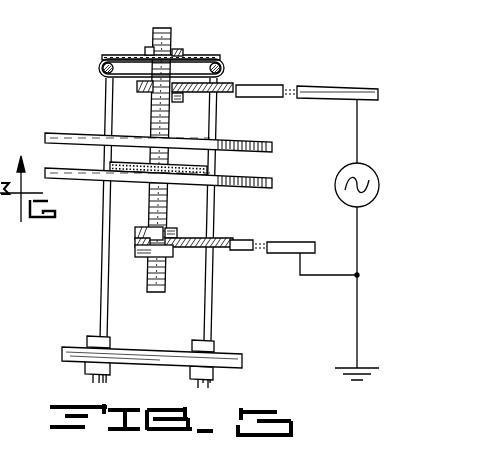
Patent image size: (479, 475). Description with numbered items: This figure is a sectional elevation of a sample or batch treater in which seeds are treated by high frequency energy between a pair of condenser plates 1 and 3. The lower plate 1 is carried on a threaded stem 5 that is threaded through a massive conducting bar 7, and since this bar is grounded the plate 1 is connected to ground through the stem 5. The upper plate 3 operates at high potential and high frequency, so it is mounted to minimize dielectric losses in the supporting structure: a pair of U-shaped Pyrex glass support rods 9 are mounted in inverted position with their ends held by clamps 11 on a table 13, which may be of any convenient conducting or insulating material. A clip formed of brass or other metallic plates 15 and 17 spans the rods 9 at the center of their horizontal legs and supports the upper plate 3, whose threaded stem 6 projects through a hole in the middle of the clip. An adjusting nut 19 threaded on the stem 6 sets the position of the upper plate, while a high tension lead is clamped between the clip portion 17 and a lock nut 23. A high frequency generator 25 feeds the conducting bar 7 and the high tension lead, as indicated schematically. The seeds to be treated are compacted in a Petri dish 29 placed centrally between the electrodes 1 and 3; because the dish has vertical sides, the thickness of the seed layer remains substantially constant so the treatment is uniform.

The condenser plate 1 is at (254, 187).
The condenser plate 3 is at (262, 130).
The threaded stem 5 is at (166, 204).
The threaded stem 6 is at (171, 103).
The conducting bar 7 is at (233, 251).
The Pyrex glass support rods 9 is at (104, 103).
The clamps 11 is at (89, 342).
The table 13 is at (64, 360).
The metallic plate 15 is at (198, 58).
The metallic plate 17 is at (229, 69).
The adjusting nut 19 is at (148, 55).
The lock nut 23 is at (144, 95).
The high frequency generator 25 is at (343, 168).
The Petri dish 29 is at (135, 160).